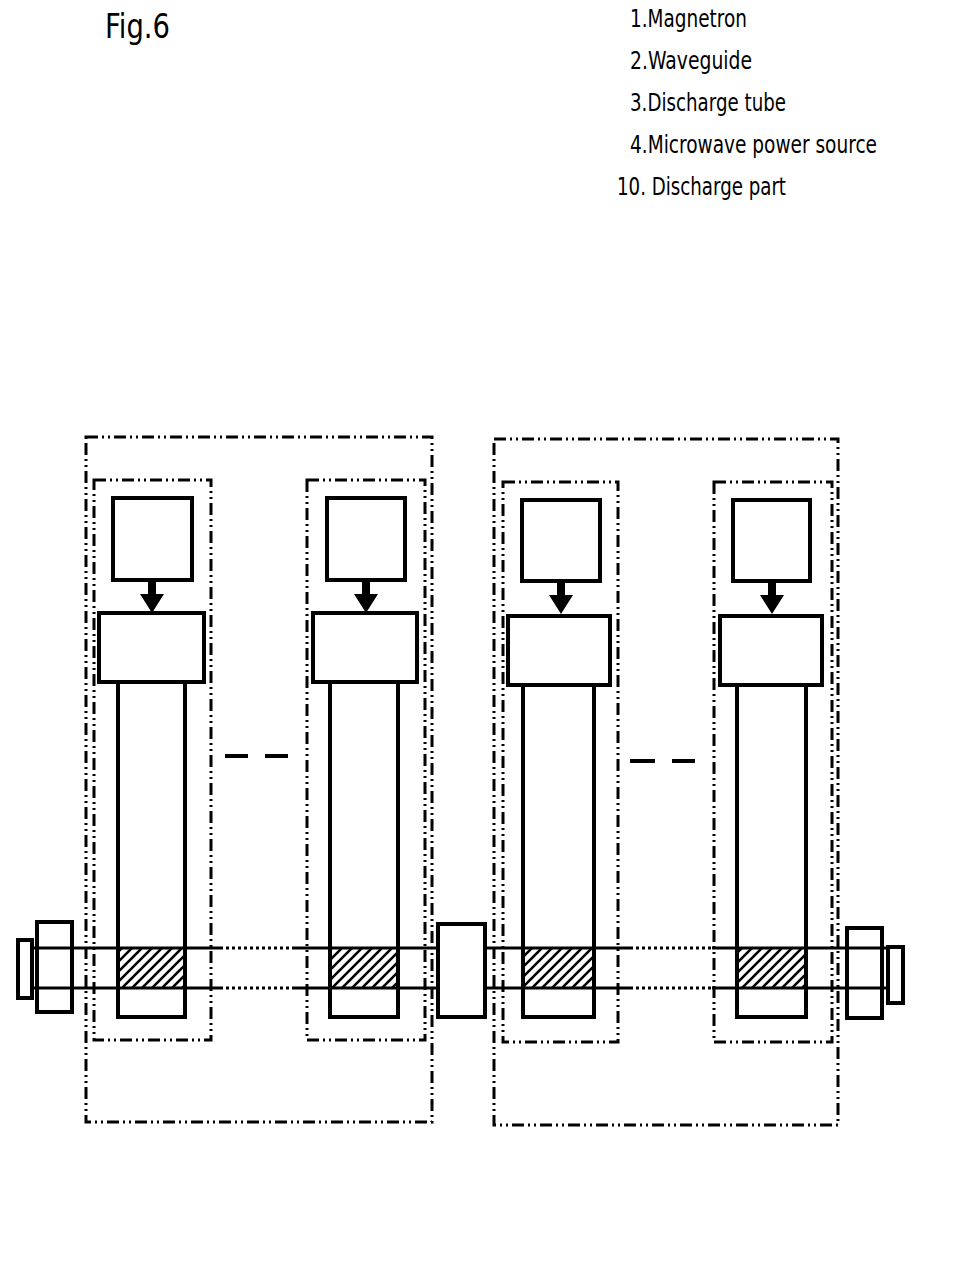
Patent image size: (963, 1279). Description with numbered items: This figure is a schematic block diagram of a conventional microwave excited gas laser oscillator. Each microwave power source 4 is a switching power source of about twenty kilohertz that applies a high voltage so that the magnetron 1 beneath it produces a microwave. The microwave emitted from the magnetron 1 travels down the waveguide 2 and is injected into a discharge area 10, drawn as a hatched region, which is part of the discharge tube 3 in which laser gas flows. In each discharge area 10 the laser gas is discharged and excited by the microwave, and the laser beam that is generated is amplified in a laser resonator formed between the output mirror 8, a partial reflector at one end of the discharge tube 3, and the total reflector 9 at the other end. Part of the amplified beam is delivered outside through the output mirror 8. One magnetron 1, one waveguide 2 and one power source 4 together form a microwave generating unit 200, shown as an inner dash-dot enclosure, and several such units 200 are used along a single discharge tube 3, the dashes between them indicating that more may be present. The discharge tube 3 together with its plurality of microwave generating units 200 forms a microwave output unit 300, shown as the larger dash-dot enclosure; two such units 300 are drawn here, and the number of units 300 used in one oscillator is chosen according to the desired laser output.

The magnetron 1 is at (100, 655).
The waveguide 2 is at (118, 813).
The discharge tube 3 is at (245, 993).
The microwave power source 4 is at (113, 527).
The discharge area 10 is at (183, 998).
The output mirror 8 is at (25, 998).
The total reflector 9 is at (897, 1003).
The microwave generating unit 200 is at (192, 478).
The microwave output unit 300 is at (143, 437).